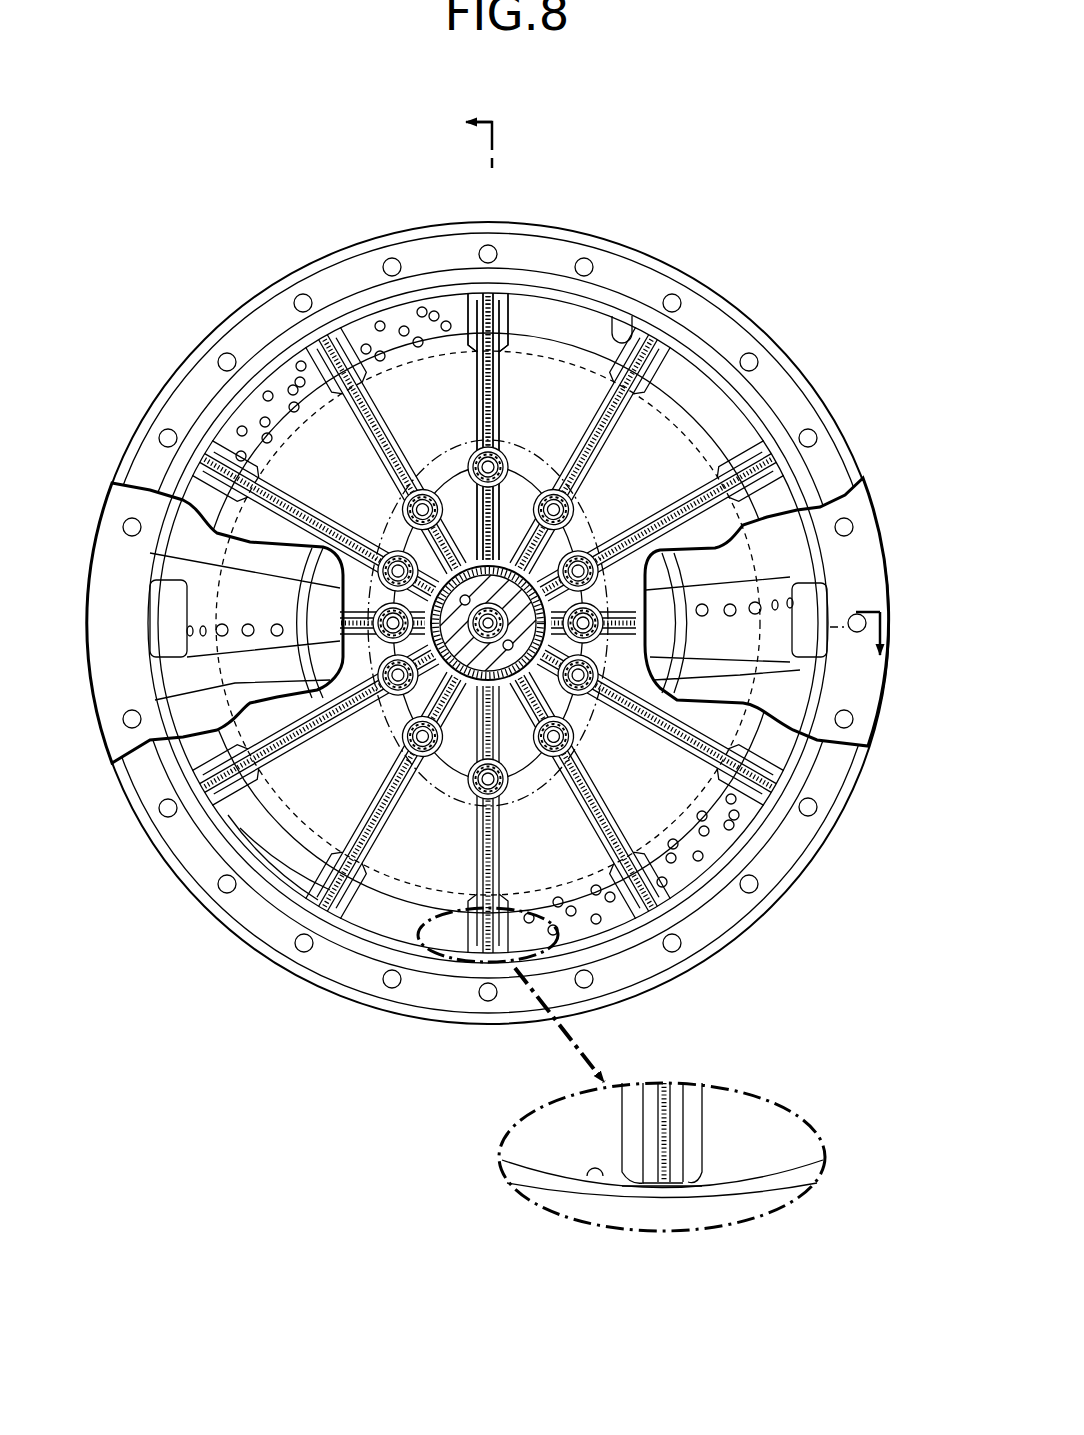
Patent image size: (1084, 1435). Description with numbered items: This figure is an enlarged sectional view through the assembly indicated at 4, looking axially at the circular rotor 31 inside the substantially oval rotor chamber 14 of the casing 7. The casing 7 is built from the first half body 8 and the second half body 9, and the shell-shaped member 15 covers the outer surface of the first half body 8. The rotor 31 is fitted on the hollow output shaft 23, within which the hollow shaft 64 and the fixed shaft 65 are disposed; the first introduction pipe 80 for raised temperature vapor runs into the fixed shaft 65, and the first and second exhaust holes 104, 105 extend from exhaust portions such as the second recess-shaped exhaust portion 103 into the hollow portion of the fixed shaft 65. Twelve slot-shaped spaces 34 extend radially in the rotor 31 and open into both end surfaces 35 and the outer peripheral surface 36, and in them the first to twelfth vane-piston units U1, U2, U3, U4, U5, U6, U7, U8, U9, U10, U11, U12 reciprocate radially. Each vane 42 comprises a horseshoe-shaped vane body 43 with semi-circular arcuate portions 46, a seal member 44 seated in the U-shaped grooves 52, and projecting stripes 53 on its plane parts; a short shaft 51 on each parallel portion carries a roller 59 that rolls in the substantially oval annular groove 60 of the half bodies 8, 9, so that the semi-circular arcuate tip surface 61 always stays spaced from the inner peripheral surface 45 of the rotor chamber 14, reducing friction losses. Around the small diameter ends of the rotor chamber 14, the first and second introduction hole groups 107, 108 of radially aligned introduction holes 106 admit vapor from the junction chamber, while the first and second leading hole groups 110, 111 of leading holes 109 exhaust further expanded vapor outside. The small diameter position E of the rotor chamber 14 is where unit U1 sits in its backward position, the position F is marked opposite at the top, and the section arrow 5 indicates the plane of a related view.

The wheel 4 is at (728, 247).
The shell-shaped member 15 is at (263, 290).
The second half body 9 is at (700, 265).
The rotor 31 is at (523, 343).
The end surfaces 35 is at (664, 428).
The first half body 8 is at (170, 537).
The casing 7 is at (777, 330).
The rotor chamber 14 is at (585, 330).
The inner peripheral surface 45 is at (697, 278).
The second introduction hole group 108 is at (215, 620).
The first introduction hole group 107 is at (778, 597).
The introduction holes 106 is at (249, 624).
The annular groove 60 is at (488, 623).
The roller 59 is at (458, 442).
The output shaft 23 is at (466, 548).
The leading holes 109 is at (358, 335).
The first leading hole group 110 is at (305, 372).
The second leading hole group 111 is at (680, 856).
The first vane-piston unit U1 is at (626, 604).
The second vane-piston unit U2 is at (742, 465).
The third vane-piston unit U3 is at (660, 355).
The fourth vane-piston unit U4 is at (466, 305).
The fifth vane-piston unit U5 is at (338, 340).
The sixth vane-piston unit U6 is at (232, 468).
The seventh vane-piston unit U7 is at (348, 602).
The eighth vane-piston unit U8 is at (245, 777).
The ninth vane-piston unit U9 is at (318, 858).
The tenth vane-piston unit U10 is at (460, 928).
The eleventh vane-piston unit U11 is at (647, 900).
The twelfth vane-piston unit U12 is at (741, 768).
The vane 42 is at (476, 382).
The outer peripheral surface 36 is at (503, 358).
The slot-shaped spaces 34 is at (497, 404).
The seal member 44 is at (500, 367).
The projecting stripes 53 is at (474, 330).
The vane body 43 is at (686, 1113).
The U-shaped grooves 52 is at (660, 1180).
The semi-circular arcuate tip surface 61 is at (668, 1188).
The semi-circular arcuate portions 46 is at (682, 1170).
The first exhaust hole 104 is at (420, 535).
The hollow shaft 64 is at (577, 550).
The second exhaust hole 105 is at (536, 638).
The first introduction pipe 80 is at (459, 794).
The fixed shaft 65 is at (400, 697).
The short shaft 51 is at (476, 556).
The section line 5 is at (678, 374).
The section point F is at (479, 212).
The small diameter position E is at (801, 644).
The second recess-shaped exhaust portion 103 is at (621, 1069).